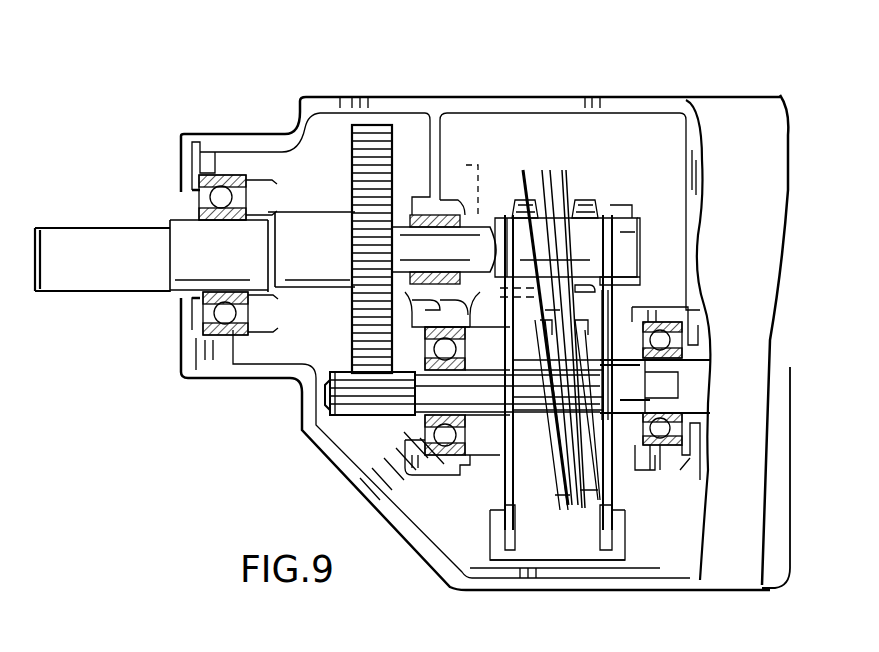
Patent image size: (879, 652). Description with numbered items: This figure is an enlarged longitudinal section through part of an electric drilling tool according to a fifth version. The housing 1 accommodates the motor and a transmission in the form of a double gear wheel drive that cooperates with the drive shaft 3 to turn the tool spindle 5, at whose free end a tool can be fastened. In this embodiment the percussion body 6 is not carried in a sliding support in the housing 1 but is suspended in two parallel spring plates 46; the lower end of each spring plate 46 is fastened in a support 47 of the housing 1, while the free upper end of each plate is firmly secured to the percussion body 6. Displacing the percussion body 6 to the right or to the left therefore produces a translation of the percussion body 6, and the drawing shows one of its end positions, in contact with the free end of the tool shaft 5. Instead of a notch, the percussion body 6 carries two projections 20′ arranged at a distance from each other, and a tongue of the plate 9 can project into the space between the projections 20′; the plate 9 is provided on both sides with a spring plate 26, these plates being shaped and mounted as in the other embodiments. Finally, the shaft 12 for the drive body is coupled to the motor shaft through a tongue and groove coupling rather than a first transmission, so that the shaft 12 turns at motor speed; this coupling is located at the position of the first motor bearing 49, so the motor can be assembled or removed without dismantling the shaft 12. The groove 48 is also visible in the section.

The housing 1 is at (468, 100).
The tool spindle 5 is at (195, 240).
The drive shaft 3 is at (700, 362).
The percussion body 6 is at (626, 206).
The plate 9 is at (547, 170).
The shaft 12 is at (493, 388).
The projections 20′ is at (516, 195).
The spring plate 26 is at (526, 172).
The spring plates 46 is at (513, 487).
The support 47 is at (578, 565).
The groove 48 is at (660, 385).
The first motor bearing 49 is at (700, 418).